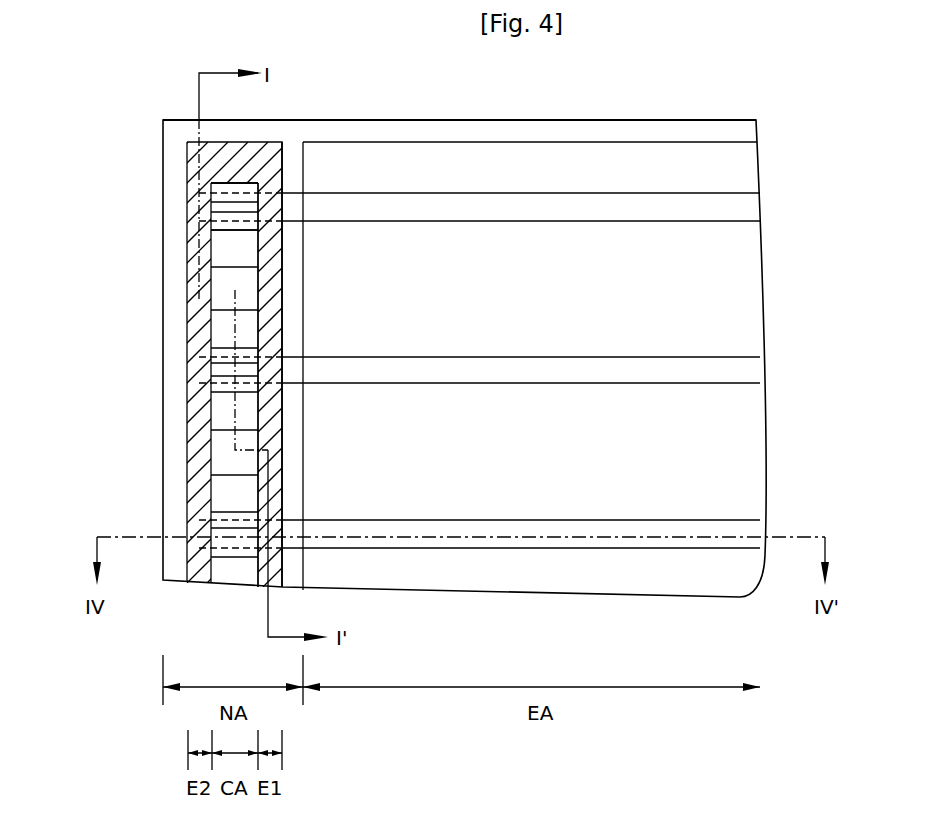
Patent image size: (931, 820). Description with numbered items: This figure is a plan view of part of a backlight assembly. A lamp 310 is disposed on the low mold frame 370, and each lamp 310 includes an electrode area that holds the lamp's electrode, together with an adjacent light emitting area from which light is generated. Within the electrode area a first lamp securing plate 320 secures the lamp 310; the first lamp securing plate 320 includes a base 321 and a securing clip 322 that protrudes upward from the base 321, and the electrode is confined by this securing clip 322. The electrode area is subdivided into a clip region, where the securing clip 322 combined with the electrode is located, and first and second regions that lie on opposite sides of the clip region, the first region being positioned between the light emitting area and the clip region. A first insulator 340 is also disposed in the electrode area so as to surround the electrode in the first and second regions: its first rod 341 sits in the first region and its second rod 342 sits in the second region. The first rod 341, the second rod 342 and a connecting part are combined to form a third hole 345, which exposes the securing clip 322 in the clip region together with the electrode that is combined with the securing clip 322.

The lamp 310 is at (757, 205).
The first lamp securing plate 320 is at (78, 218).
The base 321 is at (235, 290).
The securing clip 322 is at (223, 230).
The first insulator 340 is at (78, 395).
The first rod 341 is at (268, 447).
The second rod 342 is at (205, 413).
The third hole 345 is at (232, 494).
The low mold frame 370 is at (574, 130).